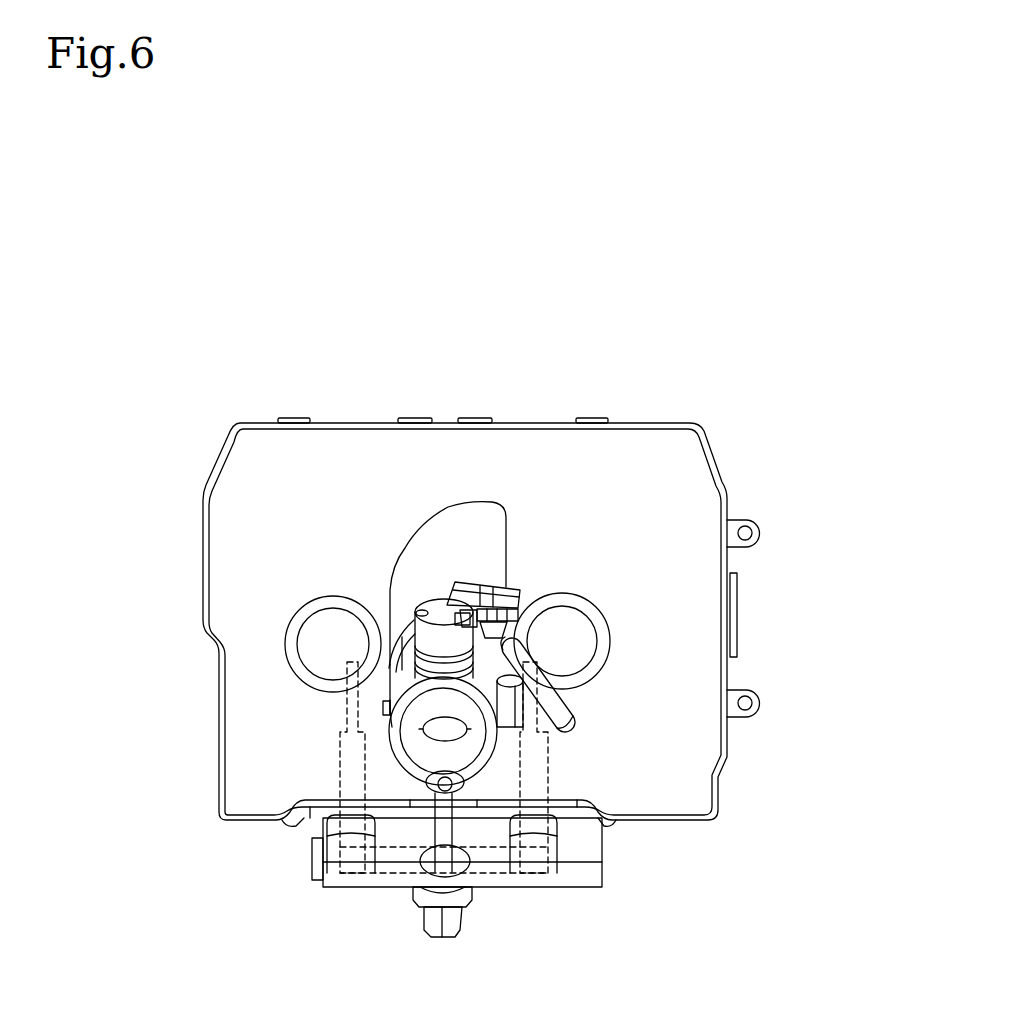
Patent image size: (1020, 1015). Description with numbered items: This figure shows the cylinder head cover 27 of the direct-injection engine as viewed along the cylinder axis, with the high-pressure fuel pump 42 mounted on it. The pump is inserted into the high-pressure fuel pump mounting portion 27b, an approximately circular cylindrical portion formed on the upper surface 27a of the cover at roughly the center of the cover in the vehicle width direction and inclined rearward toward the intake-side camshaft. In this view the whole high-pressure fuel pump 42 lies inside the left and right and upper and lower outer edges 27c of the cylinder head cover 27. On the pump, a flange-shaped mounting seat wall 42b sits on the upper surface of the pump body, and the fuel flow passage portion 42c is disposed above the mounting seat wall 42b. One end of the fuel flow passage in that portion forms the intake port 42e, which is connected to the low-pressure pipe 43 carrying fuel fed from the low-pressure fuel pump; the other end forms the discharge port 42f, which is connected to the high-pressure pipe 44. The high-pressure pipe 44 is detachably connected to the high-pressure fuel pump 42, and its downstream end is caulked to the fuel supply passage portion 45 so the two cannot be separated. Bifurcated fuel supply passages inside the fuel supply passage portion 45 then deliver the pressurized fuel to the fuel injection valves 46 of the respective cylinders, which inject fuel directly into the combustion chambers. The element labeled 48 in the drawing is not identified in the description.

The cylinder head cover 27 is at (700, 463).
The upper surface 27a is at (642, 534).
The high-pressure fuel pump mounting portion 27b is at (468, 522).
The outer edges 27c is at (338, 422).
The high-pressure fuel pump 42 is at (387, 763).
The mounting seat wall 42b is at (372, 697).
The fuel flow passage portion 42c is at (396, 672).
The intake port 42e is at (513, 717).
The discharge port 42f is at (428, 782).
The low-pressure pipe 43 is at (557, 717).
The high-pressure pipe 44 is at (440, 827).
The fuel supply passage portion 45 is at (580, 848).
The fuel injection valve 46 is at (347, 757).
The nut 48 is at (445, 927).